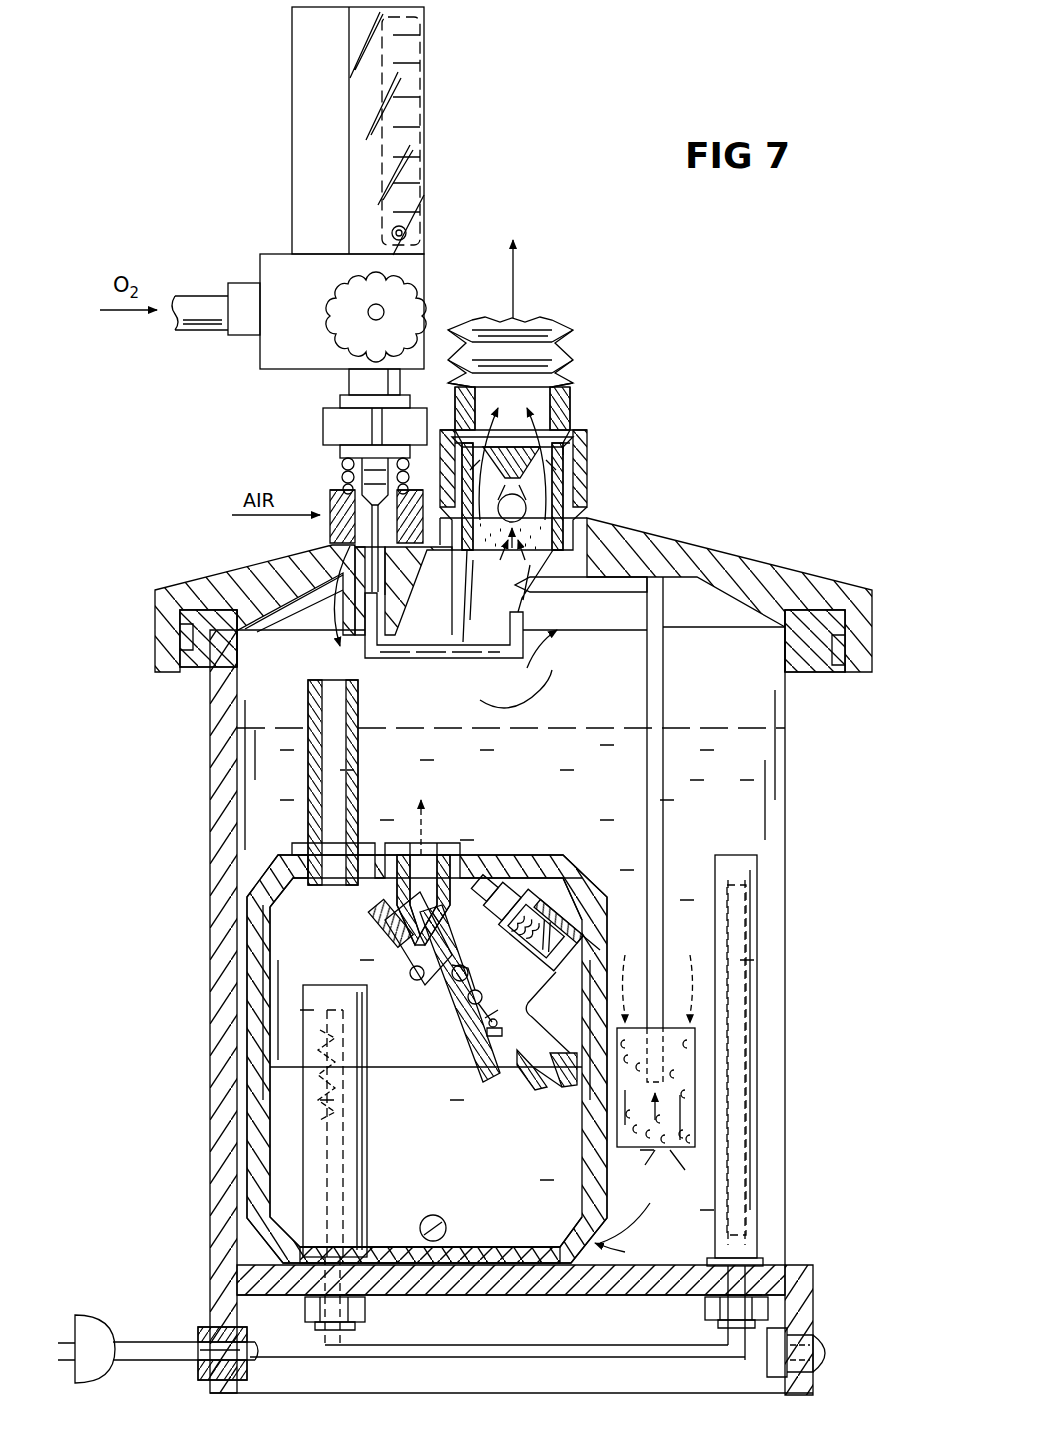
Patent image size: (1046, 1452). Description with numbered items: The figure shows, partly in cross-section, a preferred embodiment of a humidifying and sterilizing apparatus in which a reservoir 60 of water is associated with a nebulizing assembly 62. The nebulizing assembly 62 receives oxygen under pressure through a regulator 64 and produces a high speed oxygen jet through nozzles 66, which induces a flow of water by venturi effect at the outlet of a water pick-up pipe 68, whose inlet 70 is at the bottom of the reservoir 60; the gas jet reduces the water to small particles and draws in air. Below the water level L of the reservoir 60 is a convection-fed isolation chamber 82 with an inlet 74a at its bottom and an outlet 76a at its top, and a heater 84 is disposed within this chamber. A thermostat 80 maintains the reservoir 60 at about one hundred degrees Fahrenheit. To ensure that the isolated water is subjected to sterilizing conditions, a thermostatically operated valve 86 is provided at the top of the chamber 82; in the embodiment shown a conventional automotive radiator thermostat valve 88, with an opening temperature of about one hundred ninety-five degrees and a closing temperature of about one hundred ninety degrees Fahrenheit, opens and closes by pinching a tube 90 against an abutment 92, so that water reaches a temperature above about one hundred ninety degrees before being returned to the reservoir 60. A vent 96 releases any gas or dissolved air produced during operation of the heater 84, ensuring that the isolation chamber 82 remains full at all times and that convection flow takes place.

The reservoir 60 is at (210, 822).
The nebulizing assembly 62 is at (285, 478).
The regulator 64 is at (410, 230).
The nozzles 66 is at (528, 618).
The water pick-up pipe 68 is at (592, 585).
The inlet 70 is at (652, 1073).
The inlet 74a is at (443, 1225).
The outlet 76a is at (437, 854).
The thermostat 80 is at (750, 854).
The isolation chamber 82 is at (265, 957).
The heater 84 is at (355, 1122).
The thermostatically operated valve 86 is at (505, 893).
The automotive radiator thermostat valve 88 is at (483, 1040).
The tube 90 is at (408, 890).
The abutment 92 is at (392, 937).
The vent 96 is at (360, 706).
The water level L is at (770, 727).